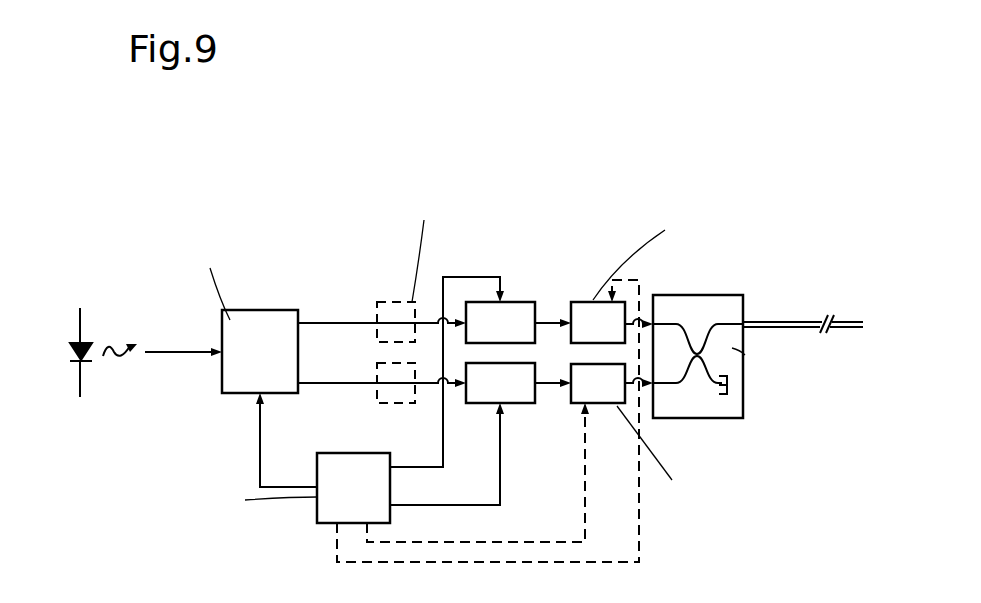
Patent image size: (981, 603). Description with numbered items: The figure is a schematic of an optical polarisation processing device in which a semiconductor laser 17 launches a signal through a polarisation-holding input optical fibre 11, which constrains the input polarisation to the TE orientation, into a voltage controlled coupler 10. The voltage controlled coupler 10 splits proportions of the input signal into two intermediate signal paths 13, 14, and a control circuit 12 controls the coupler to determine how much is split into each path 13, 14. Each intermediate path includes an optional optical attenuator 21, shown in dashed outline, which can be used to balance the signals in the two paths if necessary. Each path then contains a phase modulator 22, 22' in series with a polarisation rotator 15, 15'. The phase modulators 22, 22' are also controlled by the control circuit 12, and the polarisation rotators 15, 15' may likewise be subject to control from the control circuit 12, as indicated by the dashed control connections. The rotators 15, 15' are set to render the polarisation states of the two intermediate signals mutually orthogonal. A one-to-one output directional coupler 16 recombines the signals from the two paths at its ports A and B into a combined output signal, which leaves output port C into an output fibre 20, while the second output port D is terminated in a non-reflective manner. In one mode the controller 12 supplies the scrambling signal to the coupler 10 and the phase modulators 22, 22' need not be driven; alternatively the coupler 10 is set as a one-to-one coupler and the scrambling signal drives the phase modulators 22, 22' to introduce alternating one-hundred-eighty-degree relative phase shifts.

The voltage controlled coupler 10 is at (253, 313).
The input optical fibre 11 is at (182, 355).
The control circuit 12 is at (328, 505).
The intermediate optical path 13 is at (345, 320).
The intermediate optical path 14 is at (325, 385).
The polarisation rotator 15 is at (686, 449).
The polarisation rotator 15' is at (681, 263).
The directional coupler 16 is at (692, 403).
The semiconductor laser 17 is at (70, 347).
The output fibre 20 is at (782, 320).
The optical attenuator 21 is at (400, 300).
The phase modulator 22 is at (510, 412).
The phase modulator 22' is at (510, 291).